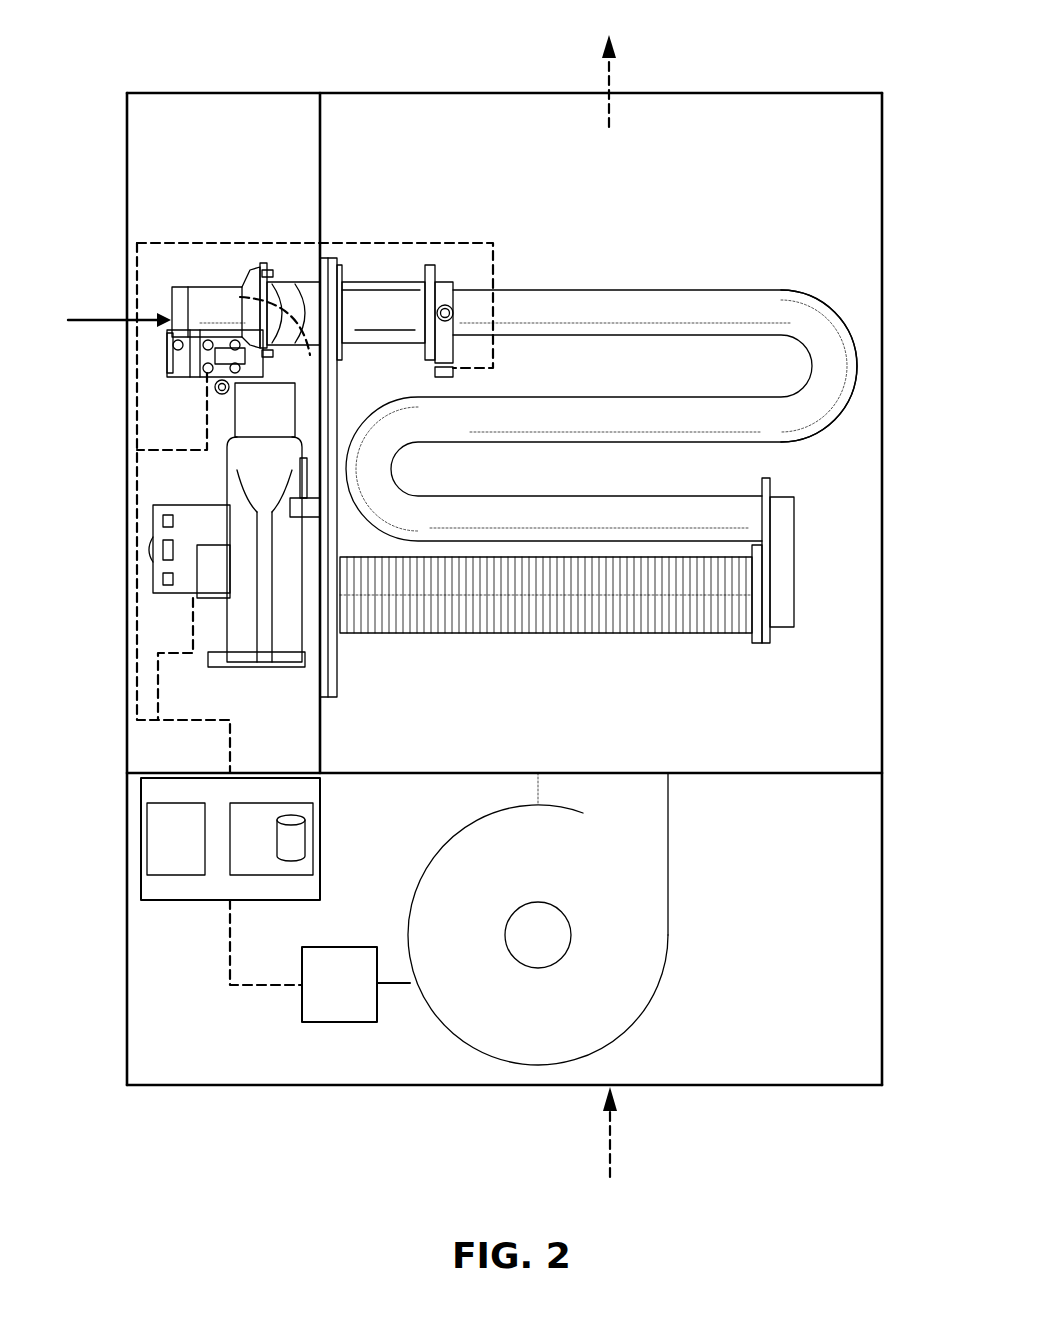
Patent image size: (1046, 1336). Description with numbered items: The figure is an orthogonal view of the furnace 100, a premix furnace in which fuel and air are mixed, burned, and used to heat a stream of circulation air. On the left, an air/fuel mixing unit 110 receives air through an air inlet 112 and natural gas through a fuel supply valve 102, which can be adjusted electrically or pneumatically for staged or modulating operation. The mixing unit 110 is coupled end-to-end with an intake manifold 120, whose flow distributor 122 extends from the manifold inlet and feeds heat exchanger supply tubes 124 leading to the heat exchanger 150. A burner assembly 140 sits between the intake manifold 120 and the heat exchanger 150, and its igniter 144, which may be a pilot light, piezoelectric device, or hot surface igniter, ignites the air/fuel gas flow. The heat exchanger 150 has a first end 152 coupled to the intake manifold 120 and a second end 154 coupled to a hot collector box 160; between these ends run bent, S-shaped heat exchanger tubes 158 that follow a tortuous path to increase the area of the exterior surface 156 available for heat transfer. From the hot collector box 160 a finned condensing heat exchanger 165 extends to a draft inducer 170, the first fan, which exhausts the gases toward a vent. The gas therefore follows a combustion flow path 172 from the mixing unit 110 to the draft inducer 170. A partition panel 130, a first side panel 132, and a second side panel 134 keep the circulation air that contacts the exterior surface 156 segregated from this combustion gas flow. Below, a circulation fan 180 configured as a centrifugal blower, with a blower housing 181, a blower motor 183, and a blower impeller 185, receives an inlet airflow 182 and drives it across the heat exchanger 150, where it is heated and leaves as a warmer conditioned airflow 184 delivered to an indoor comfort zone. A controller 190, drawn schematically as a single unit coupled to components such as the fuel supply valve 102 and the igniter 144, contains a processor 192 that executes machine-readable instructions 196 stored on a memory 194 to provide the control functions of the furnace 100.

The furnace 100 is at (145, 32).
The fuel supply valve 102 is at (180, 360).
The air/fuel mixing unit 110 is at (220, 302).
The air inlet 112 is at (152, 290).
The intake manifold 120 is at (337, 194).
The flow distributor 122 is at (303, 300).
The heat exchanger supply tubes 124 is at (375, 300).
The partition panel 130 is at (330, 425).
The first side panel 132 is at (127, 127).
The second side panel 134 is at (884, 598).
The burner assembly 140 is at (499, 264).
The igniter 144 is at (455, 372).
The heat exchanger 150 is at (598, 448).
The first end 152 is at (438, 288).
The second end 154 is at (762, 500).
The exterior surface 156 is at (678, 290).
The heat exchanger tubes 158 is at (790, 315).
The hot collector box 160 is at (777, 585).
The finned condensing heat exchanger 165 is at (483, 600).
The draft inducer 170 is at (165, 590).
The combustion flow path 172 is at (100, 319).
The circulation fan 180 is at (564, 919).
The blower housing 181 is at (625, 968).
The inlet airflow 182 is at (614, 1160).
The blower motor 183 is at (328, 1005).
The conditioned airflow 184 is at (609, 110).
The blower impeller 185 is at (528, 925).
The controller 190 is at (233, 881).
The processor 192 is at (183, 858).
The memory 194 is at (258, 862).
The machine-readable instructions 196 is at (292, 835).